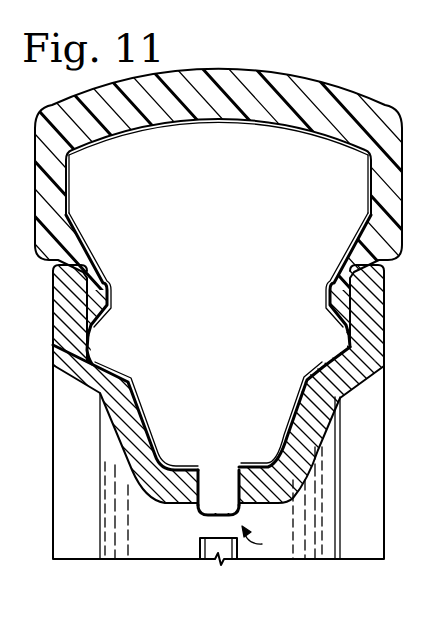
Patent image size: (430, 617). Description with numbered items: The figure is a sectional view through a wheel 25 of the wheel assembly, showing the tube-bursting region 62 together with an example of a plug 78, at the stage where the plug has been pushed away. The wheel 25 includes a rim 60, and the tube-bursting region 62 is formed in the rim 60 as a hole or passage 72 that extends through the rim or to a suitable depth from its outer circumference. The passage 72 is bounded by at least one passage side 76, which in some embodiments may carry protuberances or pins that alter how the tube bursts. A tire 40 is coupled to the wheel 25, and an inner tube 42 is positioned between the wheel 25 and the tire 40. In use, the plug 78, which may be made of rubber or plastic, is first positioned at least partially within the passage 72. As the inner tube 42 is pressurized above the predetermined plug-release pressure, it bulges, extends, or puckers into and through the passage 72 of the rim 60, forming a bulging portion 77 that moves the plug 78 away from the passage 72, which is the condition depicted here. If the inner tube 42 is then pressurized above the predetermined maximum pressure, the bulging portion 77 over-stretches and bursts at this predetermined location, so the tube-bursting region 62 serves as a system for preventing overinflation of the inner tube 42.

The tire 40 is at (197, 77).
The inner tube 42 is at (102, 165).
The rim 60 is at (68, 310).
The wheel 25 is at (67, 509).
The passage 72 is at (213, 500).
The passage side 76 is at (236, 498).
The bulging portion 77 is at (217, 500).
The tube-bursting region 62 is at (266, 543).
The plug 78 is at (200, 548).